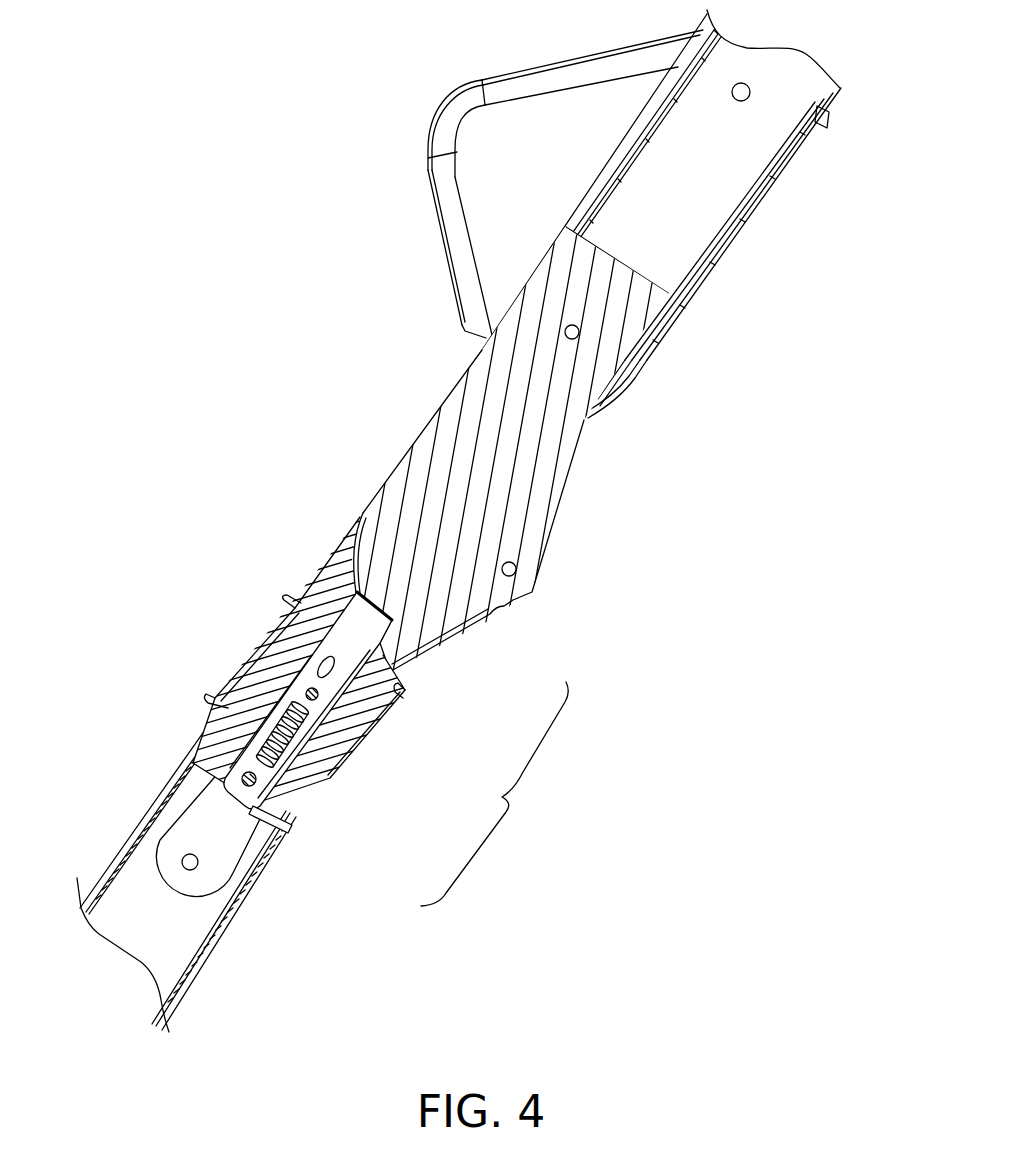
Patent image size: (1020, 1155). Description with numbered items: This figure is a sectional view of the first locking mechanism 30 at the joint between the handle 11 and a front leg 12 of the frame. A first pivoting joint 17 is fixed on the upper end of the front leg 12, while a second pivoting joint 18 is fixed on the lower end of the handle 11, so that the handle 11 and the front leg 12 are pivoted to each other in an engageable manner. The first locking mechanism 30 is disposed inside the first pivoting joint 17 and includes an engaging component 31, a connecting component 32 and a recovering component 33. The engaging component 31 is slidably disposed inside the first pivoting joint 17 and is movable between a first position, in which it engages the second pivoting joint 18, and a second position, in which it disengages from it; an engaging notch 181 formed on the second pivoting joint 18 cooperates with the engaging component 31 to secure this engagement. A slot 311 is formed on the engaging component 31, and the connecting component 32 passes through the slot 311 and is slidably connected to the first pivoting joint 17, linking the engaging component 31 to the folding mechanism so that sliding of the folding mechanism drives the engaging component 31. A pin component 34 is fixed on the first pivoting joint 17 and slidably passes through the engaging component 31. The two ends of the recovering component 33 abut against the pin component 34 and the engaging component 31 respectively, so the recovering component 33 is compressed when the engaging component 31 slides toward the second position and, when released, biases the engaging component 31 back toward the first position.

The handle 11 is at (733, 215).
The front leg 12 is at (140, 822).
The first pivoting joint 17 is at (248, 712).
The second pivoting joint 18 is at (458, 513).
The engaging notch 181 is at (357, 557).
The first locking mechanism 30 is at (494, 794).
The engaging component 31 is at (332, 639).
The slot 311 is at (320, 666).
The connecting component 32 is at (318, 697).
The recovering component 33 is at (295, 742).
The pin component 34 is at (272, 825).